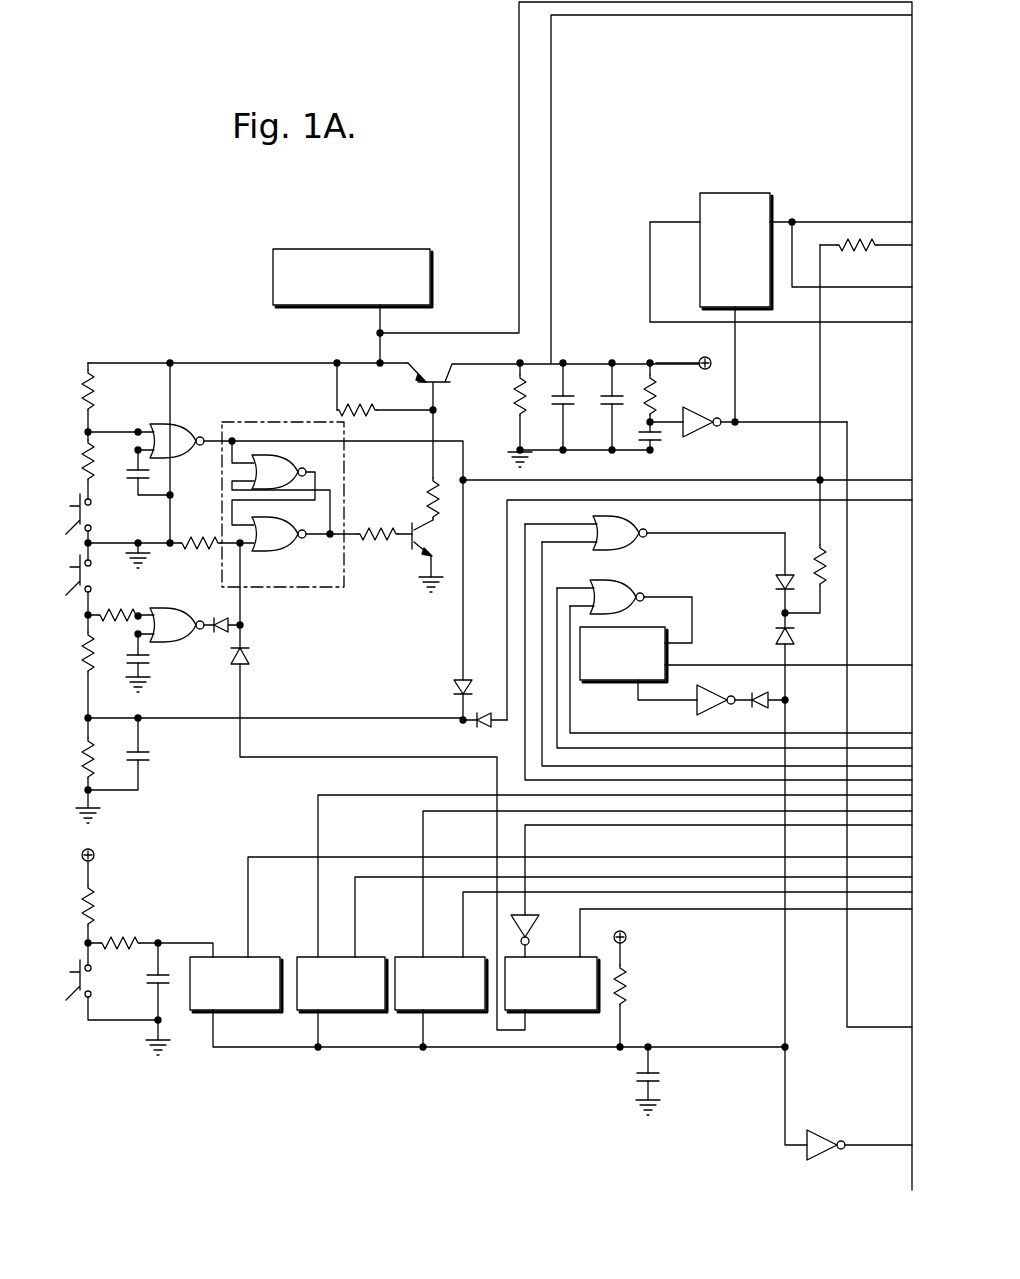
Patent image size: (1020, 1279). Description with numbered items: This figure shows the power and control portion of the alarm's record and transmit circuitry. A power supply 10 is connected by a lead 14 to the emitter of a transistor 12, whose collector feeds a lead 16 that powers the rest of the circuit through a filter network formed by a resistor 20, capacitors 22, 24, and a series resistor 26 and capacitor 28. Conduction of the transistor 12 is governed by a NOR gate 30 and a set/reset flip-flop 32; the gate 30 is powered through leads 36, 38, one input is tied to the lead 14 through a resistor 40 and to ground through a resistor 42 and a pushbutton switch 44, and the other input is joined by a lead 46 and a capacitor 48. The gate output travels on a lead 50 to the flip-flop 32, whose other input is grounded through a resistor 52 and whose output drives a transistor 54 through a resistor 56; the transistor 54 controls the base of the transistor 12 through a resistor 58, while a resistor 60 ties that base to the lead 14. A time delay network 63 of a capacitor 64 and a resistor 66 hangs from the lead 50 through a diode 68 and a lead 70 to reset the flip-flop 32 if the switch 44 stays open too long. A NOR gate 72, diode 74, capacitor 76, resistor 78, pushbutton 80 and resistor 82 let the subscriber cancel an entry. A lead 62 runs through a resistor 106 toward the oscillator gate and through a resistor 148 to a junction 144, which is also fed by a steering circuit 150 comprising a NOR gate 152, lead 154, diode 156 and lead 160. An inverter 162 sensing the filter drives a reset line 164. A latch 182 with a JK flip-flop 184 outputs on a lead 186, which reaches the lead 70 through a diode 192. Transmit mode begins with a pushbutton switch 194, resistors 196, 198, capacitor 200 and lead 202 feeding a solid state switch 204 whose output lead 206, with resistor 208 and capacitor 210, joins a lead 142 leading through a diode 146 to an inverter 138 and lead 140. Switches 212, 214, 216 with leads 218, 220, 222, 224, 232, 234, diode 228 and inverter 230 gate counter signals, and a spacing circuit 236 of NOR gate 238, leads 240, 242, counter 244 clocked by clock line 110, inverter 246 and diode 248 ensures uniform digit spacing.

The power supply 10 is at (356, 248).
The transistor 12 is at (444, 366).
The lead 14 is at (228, 360).
The lead 16 is at (780, 16).
The resistor 20 is at (514, 402).
The capacitor 22 is at (552, 404).
The capacitor 24 is at (600, 404).
The resistor 26 is at (656, 384).
The capacitor 28 is at (668, 438).
The NOR gate 30 is at (180, 436).
The set/reset flip-flop 32 is at (284, 420).
The lead 36 is at (172, 396).
The lead 38 is at (168, 516).
The resistor 40 is at (94, 388).
The resistor 42 is at (80, 462).
The normally open pushbutton switch 44 is at (76, 528).
The lead 46 is at (132, 446).
The capacitor 48 is at (134, 492).
The lead 50 is at (362, 452).
The resistor 52 is at (204, 544).
The transistor 54 is at (420, 534).
The resistor 56 is at (378, 532).
The resistor 58 is at (430, 490).
The resistor 60 is at (398, 406).
The lead 62 is at (826, 380).
The time delay network 63 is at (118, 752).
The capacitor 64 is at (150, 756).
The resistor 66 is at (84, 760).
The diode 68 is at (452, 686).
The lead 70 is at (292, 716).
The NOR gate 72 is at (168, 608).
The diode 74 is at (218, 644).
The capacitor 76 is at (158, 672).
The resistor 78 is at (122, 612).
The normally open pushbutton 80 is at (72, 590).
The resistor 82 is at (84, 660).
The resistor 106 is at (852, 256).
The clock line 110 is at (860, 664).
The inverter 138 is at (824, 1128).
The lead 140 is at (866, 1142).
The lead 142 is at (788, 996).
The junction 144 is at (772, 612).
The diode 146 is at (768, 646).
The resistor 148 is at (816, 536).
The steering circuit 150 is at (651, 554).
The NOR gate 152 is at (624, 522).
The lead 154 is at (750, 540).
The diode 156 is at (776, 600).
The lead 160 is at (622, 768).
The inverter 162 is at (700, 412).
The reset line 164 is at (738, 386).
The latch 182 is at (743, 185).
The JK flip-flop 184 is at (781, 269).
The lead 186 is at (890, 220).
The diode 192 is at (482, 728).
The normally open pushbutton switch 194 is at (74, 1010).
The resistor 196 is at (92, 892).
The resistor 198 is at (130, 934).
The capacitor 200 is at (140, 980).
The lead 202 is at (182, 940).
The solid state switch 204 is at (250, 982).
The lead 206 is at (550, 1052).
The resistor 208 is at (628, 968).
The capacitor 210 is at (662, 1076).
The solid-state switch 212 is at (448, 856).
The solid-state switch 214 is at (454, 982).
The solid-state switch 216 is at (564, 982).
The lead 218 is at (392, 792).
The lead 220 is at (372, 880).
The lead 222 is at (418, 812).
The lead 224 is at (532, 894).
The diode 228 is at (252, 654).
The inverter 230 is at (532, 920).
The lead 232 is at (528, 844).
The lead 234 is at (696, 918).
The spacing circuit 236 is at (712, 636).
The NOR gate 238 is at (638, 582).
The lead 240 is at (692, 750).
The lead 242 is at (572, 724).
The counter 244 is at (584, 684).
The inverter 246 is at (728, 704).
The diode 248 is at (768, 692).